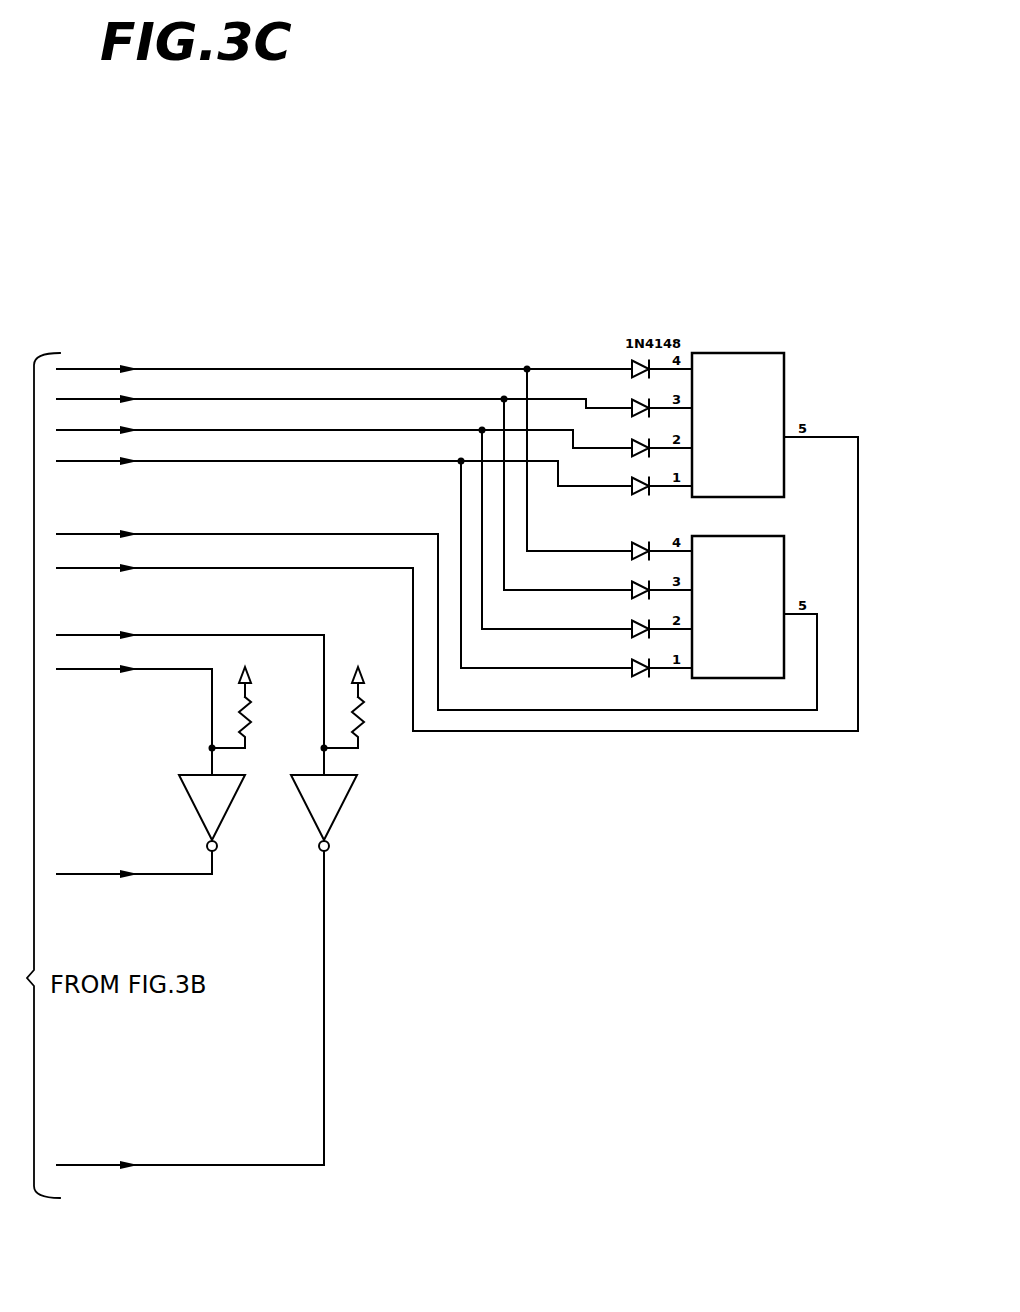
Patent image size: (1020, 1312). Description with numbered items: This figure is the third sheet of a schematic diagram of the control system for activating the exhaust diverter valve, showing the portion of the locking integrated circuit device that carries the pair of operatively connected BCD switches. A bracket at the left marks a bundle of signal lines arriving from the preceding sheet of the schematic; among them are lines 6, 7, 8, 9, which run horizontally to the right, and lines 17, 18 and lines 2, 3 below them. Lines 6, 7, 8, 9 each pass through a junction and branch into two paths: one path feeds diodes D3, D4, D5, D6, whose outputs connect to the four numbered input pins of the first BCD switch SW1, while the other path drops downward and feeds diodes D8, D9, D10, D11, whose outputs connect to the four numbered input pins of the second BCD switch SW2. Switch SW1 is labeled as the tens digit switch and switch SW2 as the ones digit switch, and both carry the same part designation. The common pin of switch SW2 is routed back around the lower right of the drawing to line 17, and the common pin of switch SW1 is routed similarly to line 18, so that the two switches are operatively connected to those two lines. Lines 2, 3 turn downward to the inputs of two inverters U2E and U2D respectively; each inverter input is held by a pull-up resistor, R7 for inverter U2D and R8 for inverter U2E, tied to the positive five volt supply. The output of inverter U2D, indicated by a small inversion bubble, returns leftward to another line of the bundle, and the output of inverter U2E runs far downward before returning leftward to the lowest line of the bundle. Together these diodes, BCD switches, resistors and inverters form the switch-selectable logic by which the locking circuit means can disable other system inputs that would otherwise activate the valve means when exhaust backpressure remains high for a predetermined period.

The signal line 6 from FIG. 3B 6 is at (344, 362).
The signal line 7 from FIG. 3B 7 is at (344, 394).
The signal line 8 from FIG. 3B 8 is at (344, 430).
The signal line 9 from FIG. 3B 9 is at (344, 464).
The signal line 17 to SW2 common 17 is at (437, 613).
The signal line 18 to SW1 common 18 is at (457, 584).
The signal line 2 to inverter U2E input 2 is at (190, 696).
The signal line 3 to inverter U2D input 3 is at (134, 713).
The diode 1N4148 D3 is at (642, 363).
The diode 1N4148 D4 is at (642, 402).
The diode 1N4148 D5 is at (642, 442).
The diode 1N4148 D6 is at (642, 480).
The diode 1N4148 D8 is at (642, 545).
The diode 1N4148 D9 is at (642, 584).
The diode 1N4148 D10 is at (642, 623).
The diode 1N4148 D11 is at (642, 662).
The BCD switch 10's DRFR10P SW1 is at (738, 409).
The BCD switch 1's DRFR10P SW2 is at (738, 590).
The pull-up resistor 10K R7 is at (255, 696).
The pull-up resistor 10K R8 is at (368, 696).
The inverter U2D is at (212, 821).
The inverter U2E is at (324, 819).